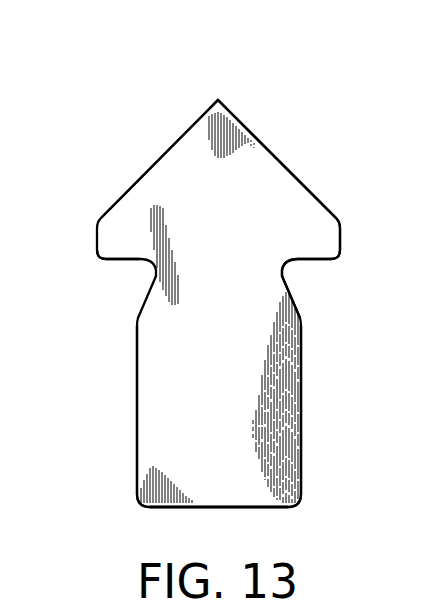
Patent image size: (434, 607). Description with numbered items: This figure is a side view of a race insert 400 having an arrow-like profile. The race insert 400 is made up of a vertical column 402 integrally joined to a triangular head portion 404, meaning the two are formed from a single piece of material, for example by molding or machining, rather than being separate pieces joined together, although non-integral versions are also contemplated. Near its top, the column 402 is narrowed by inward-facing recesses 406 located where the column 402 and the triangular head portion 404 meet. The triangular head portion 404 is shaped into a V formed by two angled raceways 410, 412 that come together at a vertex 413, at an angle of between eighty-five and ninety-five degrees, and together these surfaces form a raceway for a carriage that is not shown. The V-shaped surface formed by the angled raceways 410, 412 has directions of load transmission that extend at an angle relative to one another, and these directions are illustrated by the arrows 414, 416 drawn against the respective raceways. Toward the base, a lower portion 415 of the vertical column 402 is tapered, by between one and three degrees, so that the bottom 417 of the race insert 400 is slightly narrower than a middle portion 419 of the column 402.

The race insert 400 is at (286, 82).
The column 402 is at (301, 470).
The triangular head portion 404 is at (341, 232).
The inward-facing recesses 406 is at (133, 283).
The angled raceway 410 is at (116, 199).
The angled raceway 412 is at (322, 200).
The vertex 413 is at (219, 99).
The arrow 414 is at (163, 143).
The lower portion 415 is at (135, 475).
The arrow 416 is at (275, 142).
The bottom 417 is at (170, 508).
The middle portion 419 is at (301, 352).